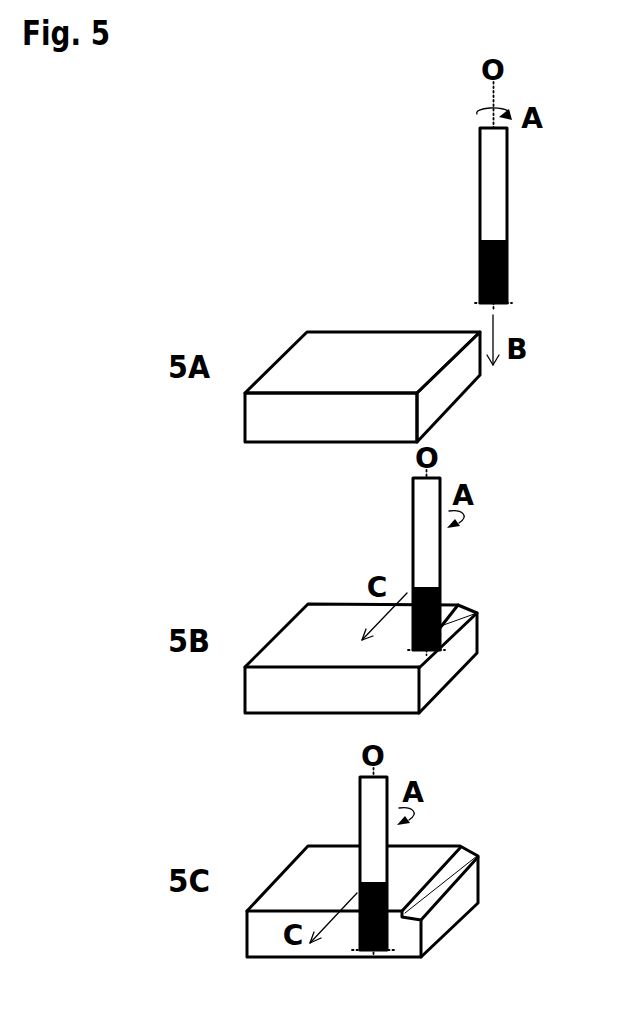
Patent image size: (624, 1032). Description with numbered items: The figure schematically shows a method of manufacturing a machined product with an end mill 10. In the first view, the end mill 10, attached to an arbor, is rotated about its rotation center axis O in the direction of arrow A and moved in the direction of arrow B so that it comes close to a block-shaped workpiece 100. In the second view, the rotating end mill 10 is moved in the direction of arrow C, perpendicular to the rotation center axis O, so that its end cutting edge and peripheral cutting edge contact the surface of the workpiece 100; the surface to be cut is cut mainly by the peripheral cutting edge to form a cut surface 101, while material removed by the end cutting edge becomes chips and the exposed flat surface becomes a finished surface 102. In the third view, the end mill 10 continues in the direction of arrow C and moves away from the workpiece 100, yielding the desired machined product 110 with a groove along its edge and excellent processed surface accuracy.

In FIG. 5A, the end mill 10 is at (497, 183).
In FIG. 5A, the workpiece 100 is at (337, 338).
In FIG. 5B, the workpiece 100 is at (302, 625).
In FIG. 5B, the cut surface 101 is at (463, 607).
In FIG. 5C, the cut surface 101 is at (462, 848).
In FIG. 5B, the finished surface 102 is at (460, 623).
In FIG. 5C, the finished surface 102 is at (438, 890).
In FIG. 5C, the machined product 110 is at (302, 868).